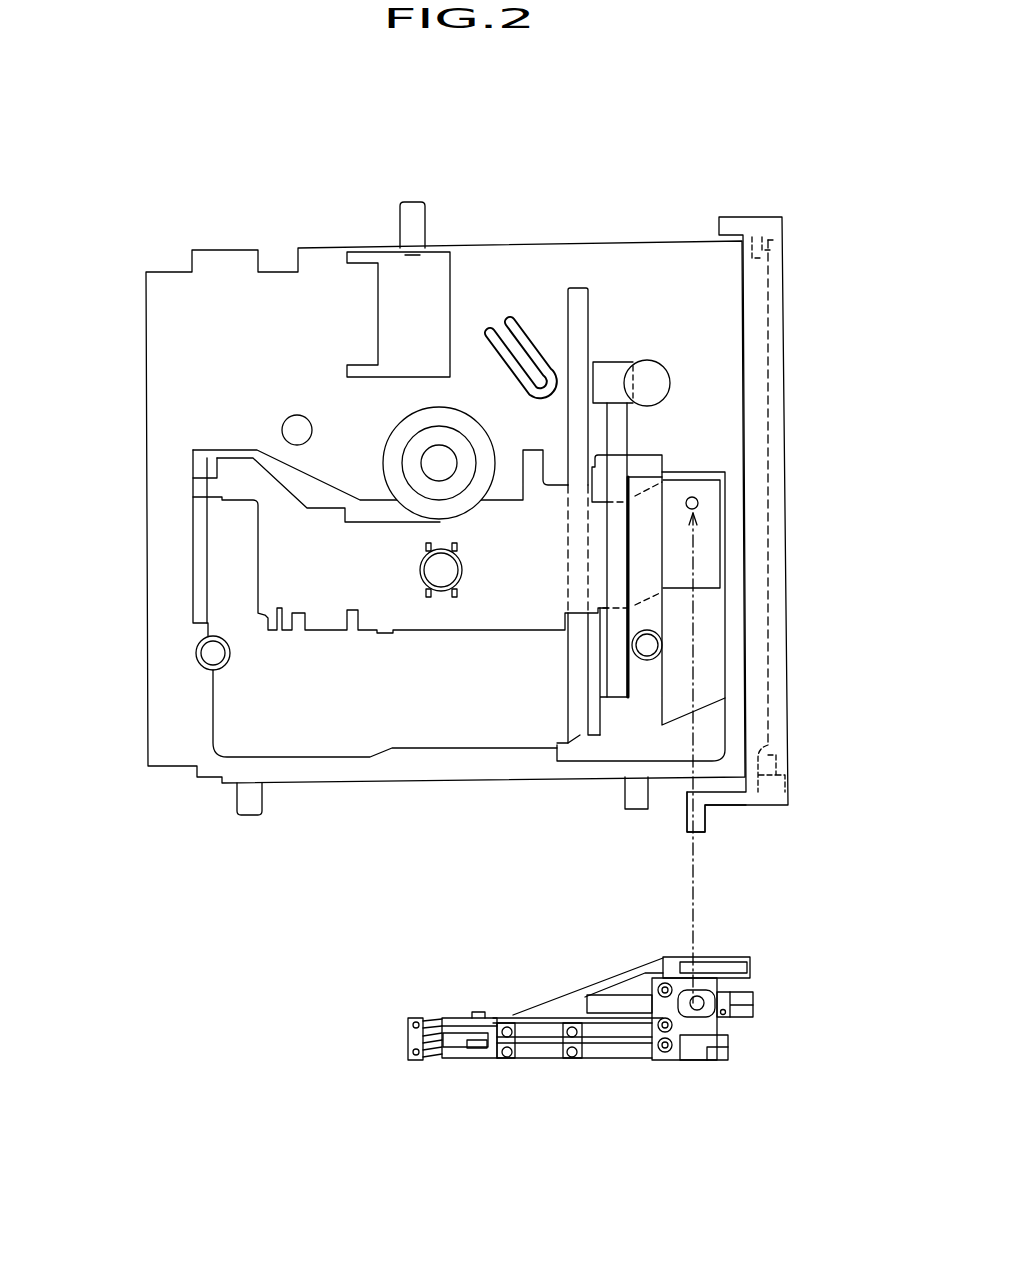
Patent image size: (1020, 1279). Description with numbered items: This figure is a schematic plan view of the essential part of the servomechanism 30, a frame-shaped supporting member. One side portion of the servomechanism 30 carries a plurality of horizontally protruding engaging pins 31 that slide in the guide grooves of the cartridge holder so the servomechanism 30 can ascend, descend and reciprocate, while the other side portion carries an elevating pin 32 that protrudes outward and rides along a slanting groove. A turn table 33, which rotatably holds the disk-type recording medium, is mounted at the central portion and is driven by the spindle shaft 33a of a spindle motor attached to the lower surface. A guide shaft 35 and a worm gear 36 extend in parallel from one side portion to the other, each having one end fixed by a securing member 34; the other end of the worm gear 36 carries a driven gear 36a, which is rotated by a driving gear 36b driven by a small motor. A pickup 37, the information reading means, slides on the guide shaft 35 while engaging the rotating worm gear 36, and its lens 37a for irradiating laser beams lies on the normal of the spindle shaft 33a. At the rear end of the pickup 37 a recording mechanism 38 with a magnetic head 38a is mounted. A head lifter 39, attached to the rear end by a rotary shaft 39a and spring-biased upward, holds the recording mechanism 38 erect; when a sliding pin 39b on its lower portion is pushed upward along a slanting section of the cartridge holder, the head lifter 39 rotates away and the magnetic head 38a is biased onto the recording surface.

The servomechanism 30 is at (157, 583).
The engaging pins 31 is at (255, 807).
The elevating pin 32 is at (407, 222).
The turn table 33 is at (383, 462).
The spindle shaft 33a is at (420, 450).
The securing member 34 is at (597, 753).
The guide shaft 35 is at (578, 690).
The worm gear 36 is at (627, 428).
The driven gear 36a is at (615, 368).
The driving gear 36b is at (668, 385).
The pickup 37 is at (337, 608).
The lens 37a is at (441, 582).
The recording mechanism 38 is at (634, 1085).
The magnetic head 38a is at (477, 1043).
The head lifter 39 is at (788, 488).
The rotary shaft 39a is at (775, 740).
The sliding pin 39b is at (705, 822).